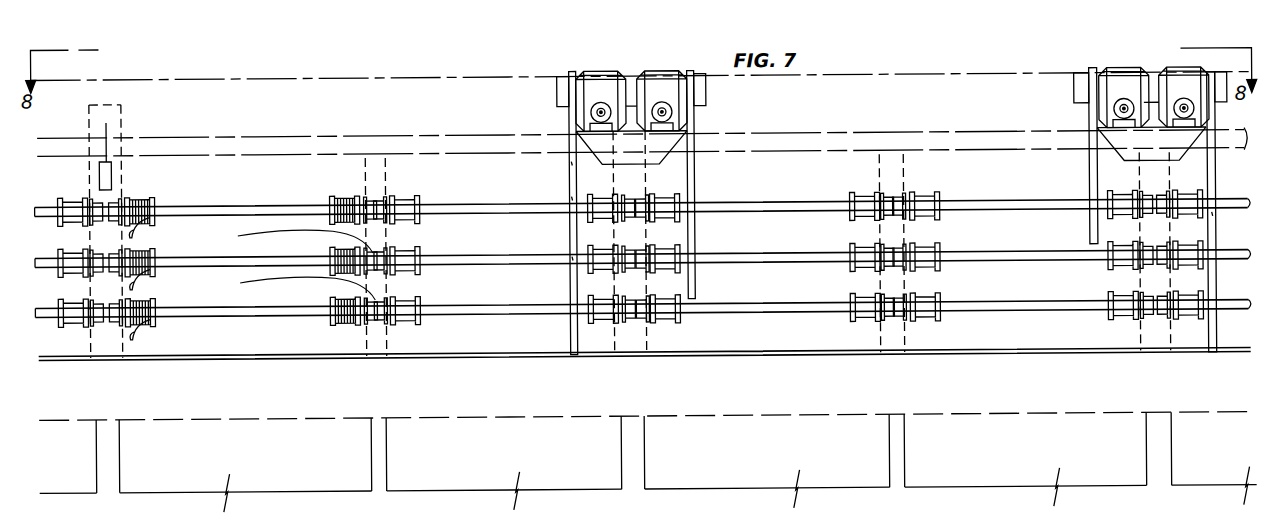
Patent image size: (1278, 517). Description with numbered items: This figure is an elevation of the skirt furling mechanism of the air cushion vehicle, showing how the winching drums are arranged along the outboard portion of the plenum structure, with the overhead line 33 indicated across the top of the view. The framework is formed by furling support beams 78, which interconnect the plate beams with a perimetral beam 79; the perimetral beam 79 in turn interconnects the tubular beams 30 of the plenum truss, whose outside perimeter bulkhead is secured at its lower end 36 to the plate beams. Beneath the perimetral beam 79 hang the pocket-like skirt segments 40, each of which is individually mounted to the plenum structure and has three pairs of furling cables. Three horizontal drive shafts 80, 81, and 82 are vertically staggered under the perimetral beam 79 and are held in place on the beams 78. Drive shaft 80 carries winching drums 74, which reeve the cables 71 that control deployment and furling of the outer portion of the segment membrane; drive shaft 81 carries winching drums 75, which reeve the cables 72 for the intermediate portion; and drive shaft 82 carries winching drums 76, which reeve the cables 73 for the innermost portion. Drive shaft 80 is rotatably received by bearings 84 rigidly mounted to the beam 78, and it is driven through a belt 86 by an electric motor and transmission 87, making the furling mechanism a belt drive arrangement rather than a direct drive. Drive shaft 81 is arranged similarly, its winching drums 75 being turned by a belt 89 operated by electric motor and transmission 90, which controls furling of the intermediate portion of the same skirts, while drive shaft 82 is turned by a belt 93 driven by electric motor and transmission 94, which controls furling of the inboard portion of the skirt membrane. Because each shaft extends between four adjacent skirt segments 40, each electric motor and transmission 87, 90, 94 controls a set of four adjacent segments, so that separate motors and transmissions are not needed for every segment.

The tubular beam 30 is at (662, 506).
The overhead track 33 is at (364, 80).
The lower end of outside perimeter bulkhead 36 is at (40, 360).
The skirt segment 40 is at (80, 423).
The cable 71 is at (148, 330).
The cable 72 is at (253, 285).
The cable 73 is at (251, 235).
The winching drum 74 is at (156, 302).
The winching drum 75 is at (152, 252).
The winching drum 76 is at (156, 198).
The furling support beam 78 is at (163, 324).
The perimetral beam 79 is at (224, 140).
The drive shaft 80 is at (778, 310).
The drive shaft 81 is at (778, 262).
The drive shaft 82 is at (758, 210).
The bearing 84 is at (113, 372).
The belt 86 is at (570, 185).
The electric motor and transmission 87 is at (584, 68).
The belt 89 is at (695, 234).
The electric motor and transmission 90 is at (668, 70).
The belt 93 is at (1090, 182).
The electric motor and transmission 94 is at (1110, 68).